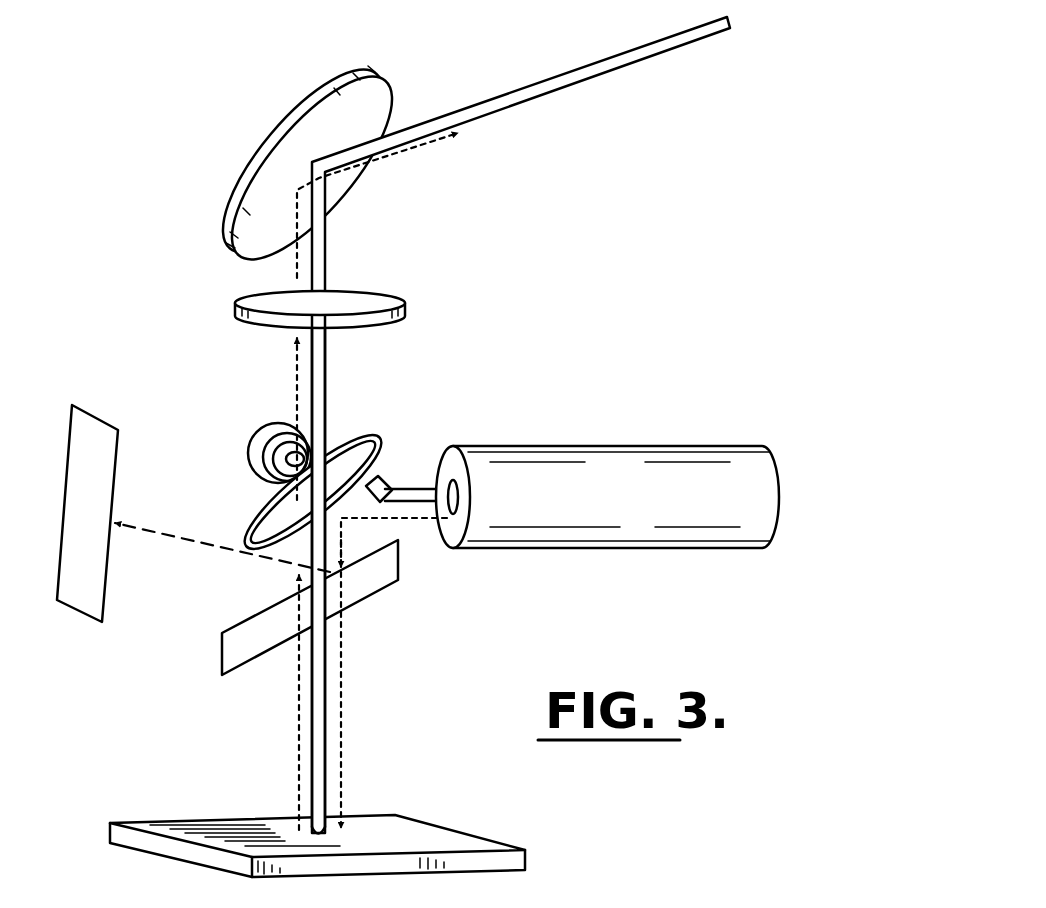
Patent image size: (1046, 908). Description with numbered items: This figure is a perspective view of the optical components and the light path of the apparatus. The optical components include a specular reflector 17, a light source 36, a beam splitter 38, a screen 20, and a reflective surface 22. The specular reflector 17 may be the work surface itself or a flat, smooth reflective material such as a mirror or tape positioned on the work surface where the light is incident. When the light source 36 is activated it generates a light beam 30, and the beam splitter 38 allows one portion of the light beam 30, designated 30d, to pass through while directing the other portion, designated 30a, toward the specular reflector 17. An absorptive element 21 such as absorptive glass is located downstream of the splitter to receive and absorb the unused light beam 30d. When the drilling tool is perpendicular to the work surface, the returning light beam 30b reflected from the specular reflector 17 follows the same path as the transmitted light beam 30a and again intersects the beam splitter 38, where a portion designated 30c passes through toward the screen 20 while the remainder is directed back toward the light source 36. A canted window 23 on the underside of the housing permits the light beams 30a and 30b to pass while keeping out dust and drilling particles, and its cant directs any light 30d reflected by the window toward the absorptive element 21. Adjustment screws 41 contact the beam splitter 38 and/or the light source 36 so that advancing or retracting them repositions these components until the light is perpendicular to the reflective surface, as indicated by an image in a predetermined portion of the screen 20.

The specular reflector 17 is at (417, 843).
The screen 20 is at (362, 300).
The absorptive element 21 is at (80, 616).
The reflective surface 22 is at (288, 133).
The window 23 is at (370, 598).
The light beam 30 is at (423, 460).
The light beam portion directed toward the specular reflector 30a is at (340, 698).
The returning light beam 30b is at (297, 773).
The light beam portion passing toward the screen 30c is at (657, 58).
The light beam portion passing through the splitter 30d is at (219, 548).
The light source 36 is at (687, 553).
The beam splitter 38 is at (277, 538).
The adjustment screws 41 is at (255, 432).